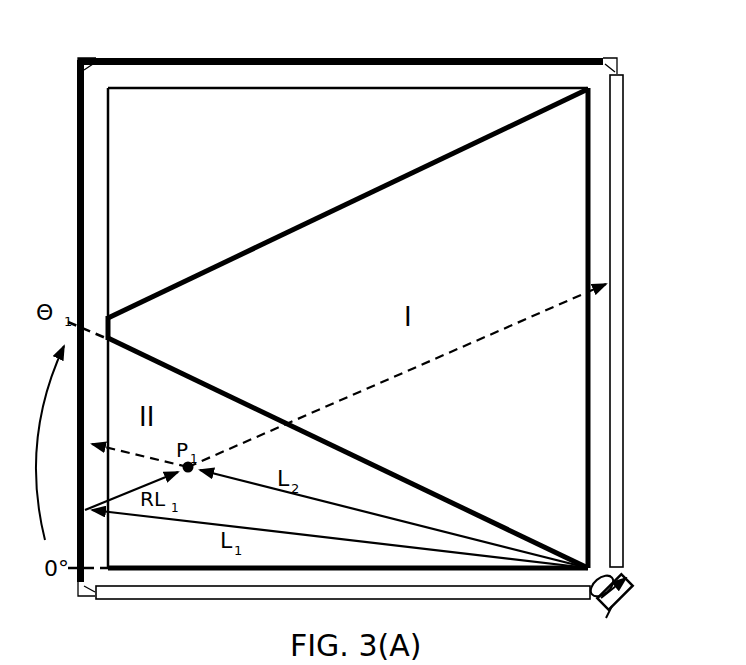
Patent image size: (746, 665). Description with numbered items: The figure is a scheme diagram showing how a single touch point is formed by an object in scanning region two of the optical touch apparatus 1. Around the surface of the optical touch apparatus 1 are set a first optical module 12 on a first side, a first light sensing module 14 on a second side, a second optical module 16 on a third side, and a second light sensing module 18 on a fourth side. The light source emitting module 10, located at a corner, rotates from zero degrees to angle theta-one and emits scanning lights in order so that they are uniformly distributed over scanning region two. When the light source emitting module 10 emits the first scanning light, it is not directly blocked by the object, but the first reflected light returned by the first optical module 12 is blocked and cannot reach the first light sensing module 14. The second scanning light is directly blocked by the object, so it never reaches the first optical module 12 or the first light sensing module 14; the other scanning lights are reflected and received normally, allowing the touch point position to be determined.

The optical touch apparatus 1 is at (462, 48).
The light source emitting module 10 is at (636, 590).
The first optical module 12 is at (78, 172).
The first light sensing module 14 is at (618, 337).
The second optical module 16 is at (318, 60).
The second light sensing module 18 is at (226, 592).